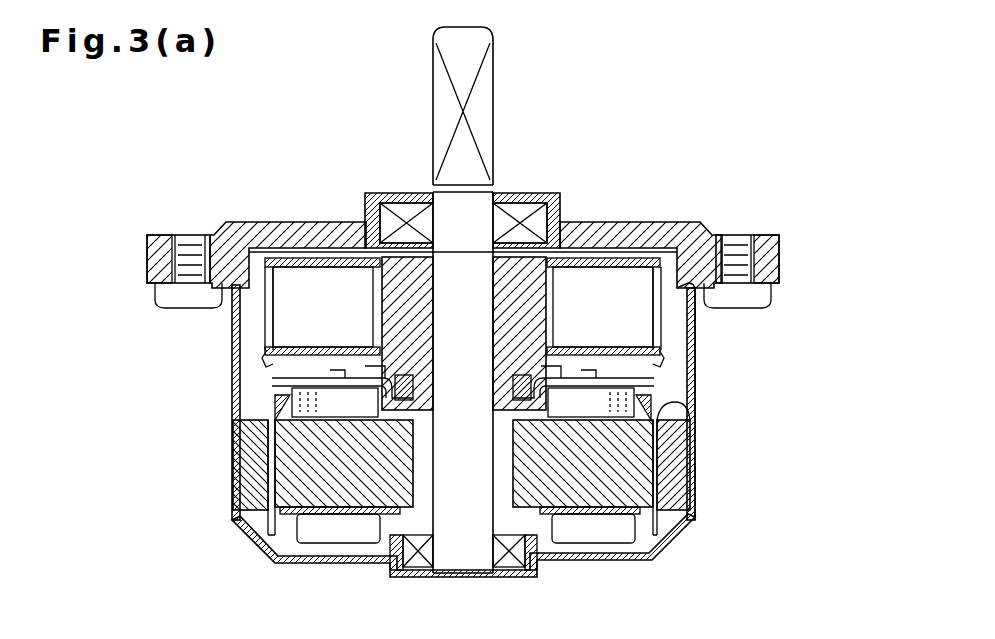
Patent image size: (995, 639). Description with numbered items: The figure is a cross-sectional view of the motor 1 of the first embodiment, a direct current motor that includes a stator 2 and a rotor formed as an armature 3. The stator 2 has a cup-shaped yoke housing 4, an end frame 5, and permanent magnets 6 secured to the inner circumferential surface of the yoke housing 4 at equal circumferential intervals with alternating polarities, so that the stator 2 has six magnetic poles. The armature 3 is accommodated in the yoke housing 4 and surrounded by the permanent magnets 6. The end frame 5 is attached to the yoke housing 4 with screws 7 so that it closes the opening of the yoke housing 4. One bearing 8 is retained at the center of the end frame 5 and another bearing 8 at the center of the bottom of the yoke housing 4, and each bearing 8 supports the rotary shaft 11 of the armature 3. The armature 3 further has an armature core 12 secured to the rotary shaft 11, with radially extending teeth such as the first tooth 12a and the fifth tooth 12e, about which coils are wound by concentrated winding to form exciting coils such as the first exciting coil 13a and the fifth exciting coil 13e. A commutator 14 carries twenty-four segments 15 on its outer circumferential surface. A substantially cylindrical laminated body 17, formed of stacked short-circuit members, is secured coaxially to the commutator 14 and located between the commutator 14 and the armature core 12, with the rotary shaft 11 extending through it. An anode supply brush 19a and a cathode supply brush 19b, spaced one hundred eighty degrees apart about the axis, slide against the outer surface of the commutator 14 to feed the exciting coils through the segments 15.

The motor 1 is at (650, 109).
The stator 2 is at (698, 368).
The armature 3 is at (650, 412).
The yoke housing 4 is at (232, 370).
The end frame 5 is at (303, 222).
The permanent magnets 6 is at (245, 468).
The screws 7 is at (170, 300).
The bearing 8 is at (520, 200).
The rotary shaft 11 is at (488, 97).
The armature core 12 is at (655, 440).
The first tooth 12a is at (655, 500).
The fifth tooth 12e is at (280, 497).
The first exciting coil 13a is at (603, 535).
The fifth exciting coil 13e is at (327, 535).
The commutator 14 is at (565, 222).
The segments 15 is at (378, 300).
The laminated body 17 is at (547, 405).
The anode supply brush 19a is at (640, 322).
The cathode supply brush 19b is at (285, 322).